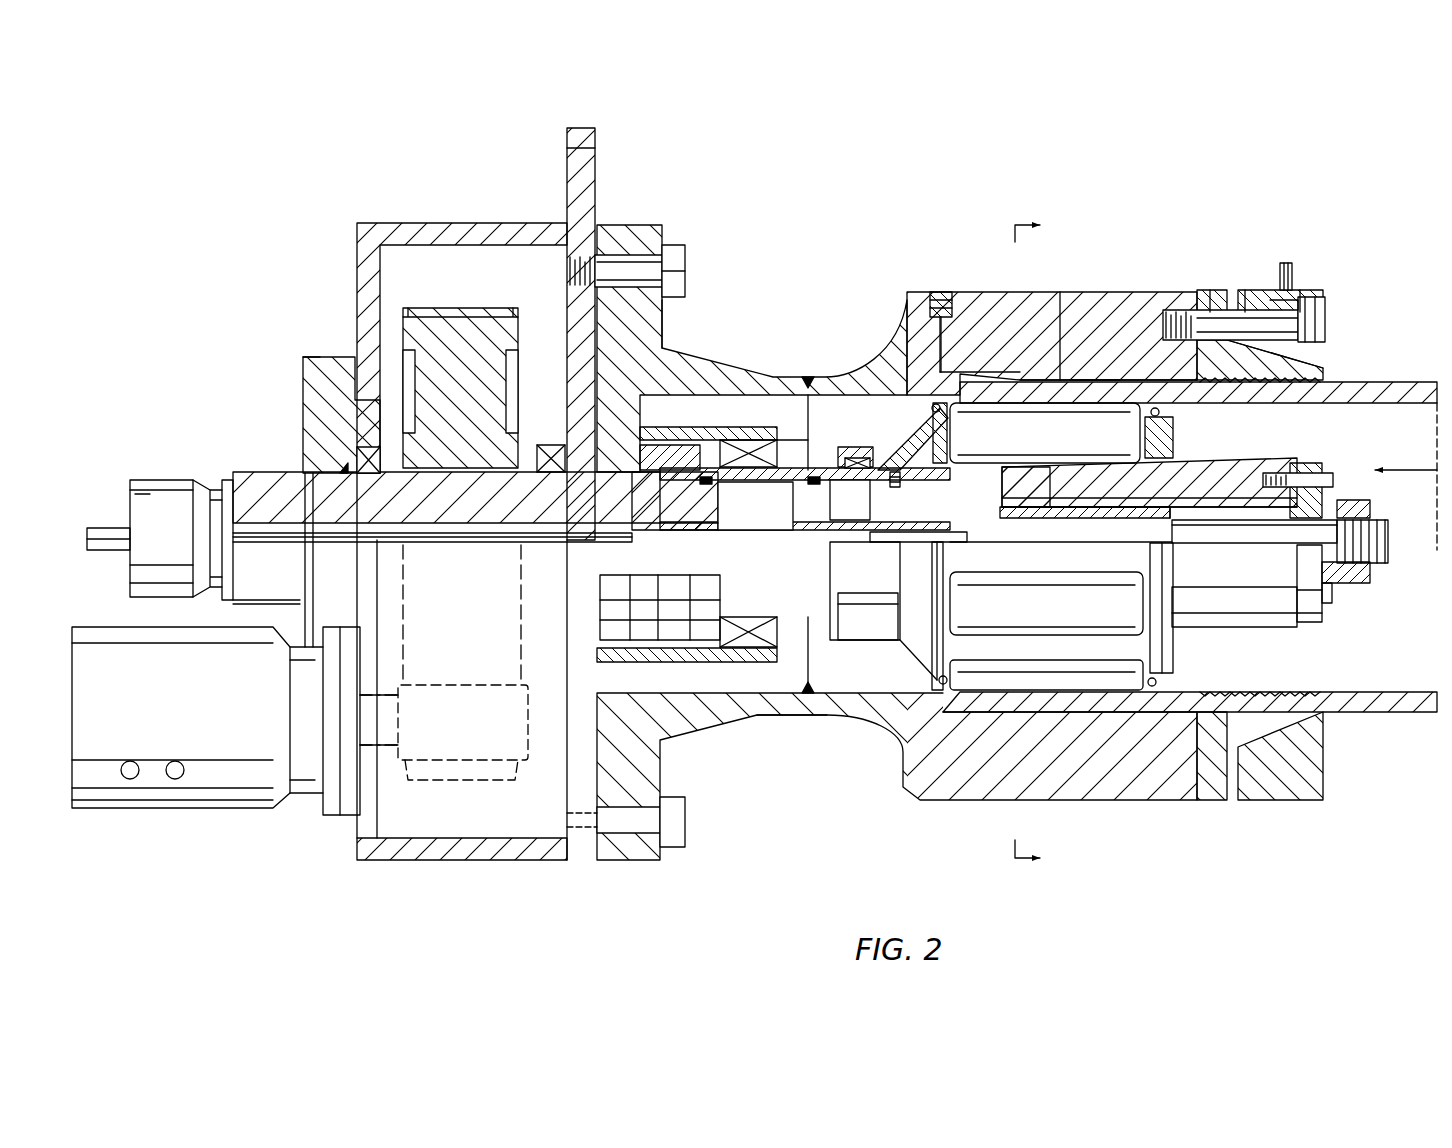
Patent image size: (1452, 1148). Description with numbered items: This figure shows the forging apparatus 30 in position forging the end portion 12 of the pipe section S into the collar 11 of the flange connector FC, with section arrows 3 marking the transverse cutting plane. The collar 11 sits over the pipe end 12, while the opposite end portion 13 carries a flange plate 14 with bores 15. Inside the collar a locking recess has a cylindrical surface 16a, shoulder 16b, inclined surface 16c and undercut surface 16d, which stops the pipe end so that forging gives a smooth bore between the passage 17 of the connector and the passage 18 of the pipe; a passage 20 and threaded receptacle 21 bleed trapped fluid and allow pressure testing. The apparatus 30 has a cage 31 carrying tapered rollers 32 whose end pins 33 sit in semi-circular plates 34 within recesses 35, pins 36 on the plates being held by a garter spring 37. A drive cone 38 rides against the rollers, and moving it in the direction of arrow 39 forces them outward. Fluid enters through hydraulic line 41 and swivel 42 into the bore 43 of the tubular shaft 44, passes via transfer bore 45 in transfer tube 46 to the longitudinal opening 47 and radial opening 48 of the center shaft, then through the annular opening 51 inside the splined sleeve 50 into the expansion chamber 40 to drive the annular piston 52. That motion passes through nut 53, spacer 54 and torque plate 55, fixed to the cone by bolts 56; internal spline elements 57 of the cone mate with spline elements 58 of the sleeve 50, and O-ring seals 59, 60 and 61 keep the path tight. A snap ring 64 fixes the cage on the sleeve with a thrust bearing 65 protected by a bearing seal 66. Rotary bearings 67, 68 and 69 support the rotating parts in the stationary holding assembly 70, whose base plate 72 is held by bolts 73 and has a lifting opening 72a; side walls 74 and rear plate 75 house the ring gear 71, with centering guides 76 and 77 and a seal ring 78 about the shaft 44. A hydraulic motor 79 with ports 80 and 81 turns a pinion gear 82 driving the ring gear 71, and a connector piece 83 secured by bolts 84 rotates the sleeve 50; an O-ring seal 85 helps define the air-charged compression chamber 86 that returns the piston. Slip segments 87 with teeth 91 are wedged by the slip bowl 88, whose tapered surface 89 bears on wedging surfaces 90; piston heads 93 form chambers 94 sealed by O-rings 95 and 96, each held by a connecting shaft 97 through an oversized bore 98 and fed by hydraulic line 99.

The collar 11 is at (957, 292).
The end portion of the pipe section 12 is at (1112, 378).
The opposite end portion of the flange connector 13 is at (690, 350).
The flange plate 14 is at (663, 320).
The bores 15 is at (618, 255).
The cylindrical surface 16a is at (995, 372).
The shoulder 16b is at (1050, 378).
The inclined surface 16c is at (1078, 380).
The undercut surface 16d is at (955, 372).
The passage 17 is at (725, 425).
The passage 18 is at (1400, 392).
The passage 20 is at (925, 300).
The internally threaded receptacle 21 is at (935, 292).
The forging apparatus 30 is at (275, 898).
The cage 31 is at (940, 645).
The tapered rollers 32 is at (910, 635).
The end pins 33 is at (932, 425).
The mounting plates 34 is at (975, 470).
The recesses 35 is at (1165, 600).
The pins 36 is at (930, 400).
The garter spring 37 is at (878, 730).
The drive cone 38 is at (1300, 622).
The arrow 39 is at (1428, 470).
The annular expansion chamber 40 is at (850, 500).
The hydraulic line 41 is at (100, 528).
The hydraulic swivel 42 is at (150, 480).
The central bore 43 is at (215, 490).
The tubular shaft 44 is at (240, 478).
The transfer bore 45 is at (700, 562).
The transfer tube 46 is at (745, 548).
The longitudinal opening 47 is at (908, 545).
The radial opening 48 is at (955, 545).
The splined connector sleeve 50 is at (1068, 507).
The annular opening 51 is at (1120, 507).
The annular piston 52 is at (780, 530).
The nut 53 is at (1370, 563).
The annular spacer 54 is at (1340, 583).
The torque plate 55 is at (1322, 492).
The bolts 56 is at (1305, 473).
The spline elements 57 is at (1245, 545).
The spline elements 58 is at (1228, 507).
The O-ring seal 59 is at (1170, 518).
The O-ring seal 60 is at (812, 440).
The O-ring seal 61 is at (810, 528).
The snap ring 64 is at (1002, 492).
The thrust bearing 65 is at (900, 480).
The bearing seal 66 is at (857, 447).
The rotary bearing 67 is at (770, 455).
The rotary bearing 68 is at (540, 465).
The rotary bearing 69 is at (318, 393).
The holding assembly 70 is at (432, 485).
The ring gear 71 is at (474, 330).
The base plate 72 is at (585, 183).
The opening 72a is at (575, 150).
The bolts 73 is at (675, 245).
The side walls 74 is at (440, 233).
The rear plate 75 is at (368, 277).
The centering guide 76 is at (795, 440).
The second centering guide 77 is at (312, 370).
The annular seal ring 78 is at (350, 455).
The hydraulic motor 79 is at (200, 690).
The port 80 is at (128, 780).
The port 81 is at (175, 780).
The pinion gear 82 is at (455, 745).
The connector piece 83 is at (712, 482).
The bolts 84 is at (690, 427).
The O-ring seal 85 is at (707, 480).
The compression chamber 86 is at (778, 700).
The slip segments 87 is at (1210, 290).
The slip bowl 88 is at (1260, 290).
The internally tapered wedging surface 89 is at (1323, 355).
The wedging surfaces 90 is at (1323, 368).
The teeth 91 is at (1295, 386).
The piston head 93 is at (1325, 320).
The chamber 94 is at (1292, 268).
The O-ring seal 95 is at (1283, 305).
The O-ring seal 96 is at (1290, 300).
The connecting shaft 97 is at (1205, 290).
The oversized bore 98 is at (1240, 290).
The hydraulic line 99 is at (1305, 290).
The section line 3 is at (1037, 542).
The flange connector FC is at (790, 212).
The pipe section S is at (1405, 392).